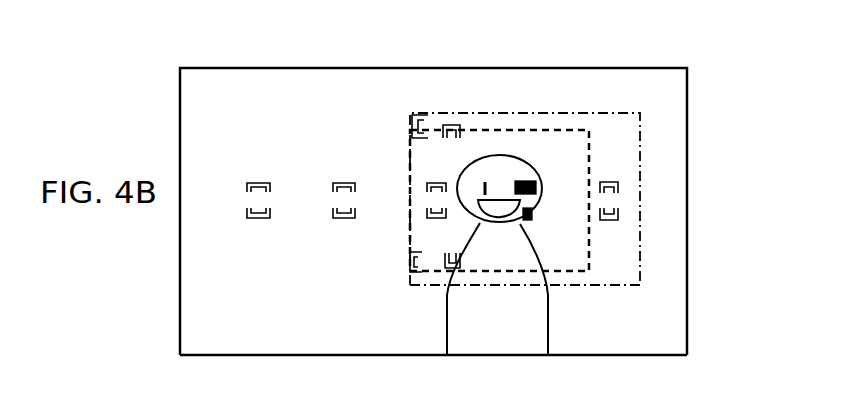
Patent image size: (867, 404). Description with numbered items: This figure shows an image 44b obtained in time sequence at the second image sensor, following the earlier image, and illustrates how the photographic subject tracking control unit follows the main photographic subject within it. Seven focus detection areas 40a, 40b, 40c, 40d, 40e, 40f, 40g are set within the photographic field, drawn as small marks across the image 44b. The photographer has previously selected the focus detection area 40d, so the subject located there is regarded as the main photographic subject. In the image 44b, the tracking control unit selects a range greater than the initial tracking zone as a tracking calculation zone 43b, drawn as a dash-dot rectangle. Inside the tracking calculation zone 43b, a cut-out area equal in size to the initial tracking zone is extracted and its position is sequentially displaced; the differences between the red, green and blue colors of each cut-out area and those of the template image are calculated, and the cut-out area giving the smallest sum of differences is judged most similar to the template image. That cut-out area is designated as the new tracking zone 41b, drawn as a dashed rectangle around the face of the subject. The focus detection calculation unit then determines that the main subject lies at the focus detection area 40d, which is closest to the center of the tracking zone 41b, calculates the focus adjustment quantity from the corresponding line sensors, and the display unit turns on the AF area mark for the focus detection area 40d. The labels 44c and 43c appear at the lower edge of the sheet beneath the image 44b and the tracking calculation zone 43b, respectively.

The focus detection area 40a is at (258, 183).
The focus detection area 40b is at (340, 183).
The focus detection area 40c is at (427, 190).
The focus detection area 40d is at (531, 184).
The focus detection area 40e is at (608, 221).
The focus detection area 40f is at (453, 128).
The focus detection area 40g is at (413, 273).
The tracking zone 41b is at (588, 143).
The tracking calculation zone 43b is at (633, 112).
The focus detection region 43c is at (541, 344).
The image 44b is at (258, 68).
The image display screen 44c is at (433, 379).